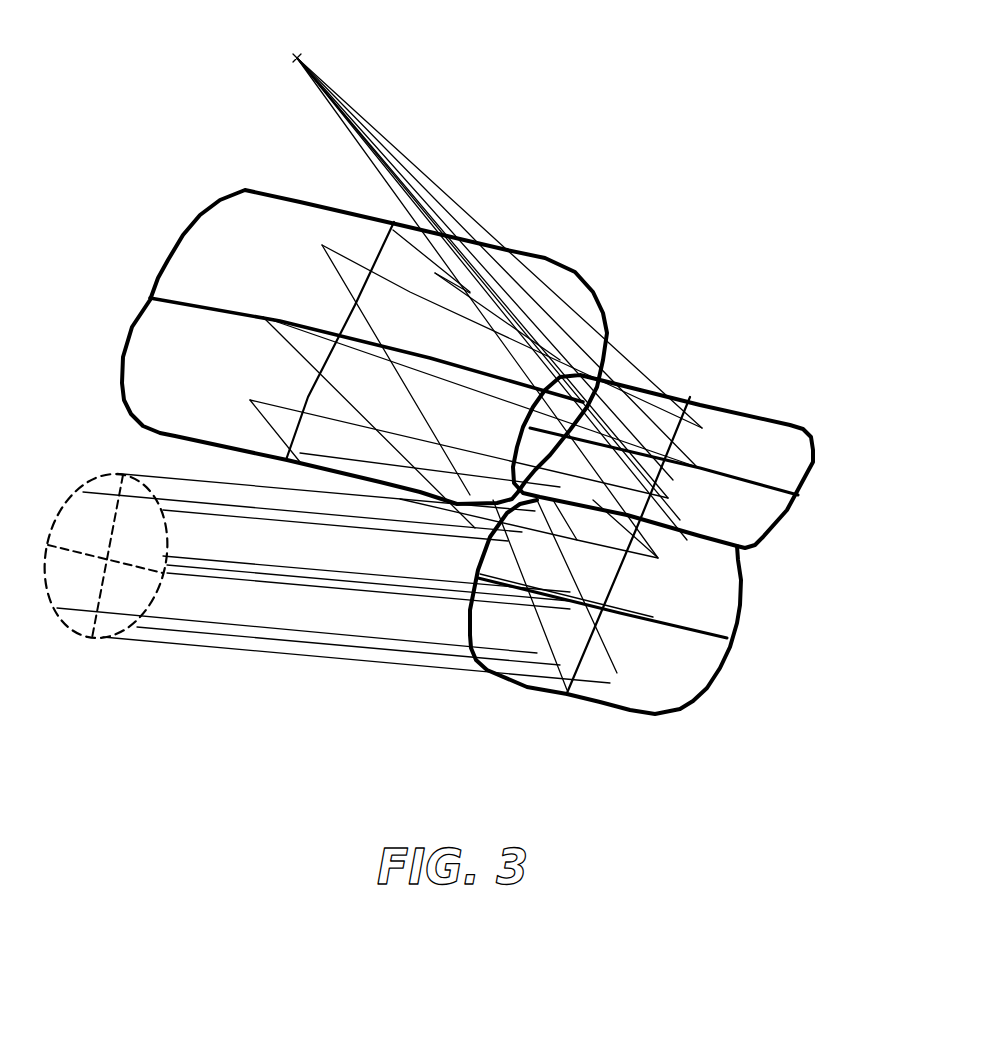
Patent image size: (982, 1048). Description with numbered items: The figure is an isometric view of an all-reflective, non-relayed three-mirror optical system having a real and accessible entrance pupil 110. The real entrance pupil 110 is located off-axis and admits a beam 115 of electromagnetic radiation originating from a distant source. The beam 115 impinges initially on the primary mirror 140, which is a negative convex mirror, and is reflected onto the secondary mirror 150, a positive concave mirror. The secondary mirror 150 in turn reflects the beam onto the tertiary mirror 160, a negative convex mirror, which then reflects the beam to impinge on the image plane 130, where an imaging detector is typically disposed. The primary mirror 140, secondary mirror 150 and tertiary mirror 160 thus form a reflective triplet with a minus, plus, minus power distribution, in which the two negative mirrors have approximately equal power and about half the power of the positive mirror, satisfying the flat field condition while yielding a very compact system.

The real entrance pupil 110 is at (113, 472).
The beam 115 is at (293, 660).
The image plane 130 is at (299, 56).
The primary mirror 140 is at (697, 700).
The secondary mirror 150 is at (183, 233).
The tertiary mirror 160 is at (737, 408).